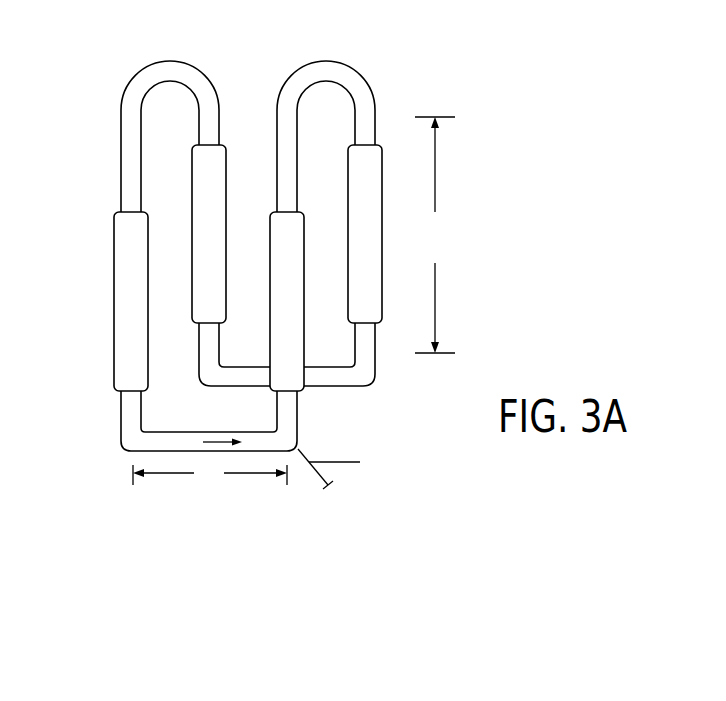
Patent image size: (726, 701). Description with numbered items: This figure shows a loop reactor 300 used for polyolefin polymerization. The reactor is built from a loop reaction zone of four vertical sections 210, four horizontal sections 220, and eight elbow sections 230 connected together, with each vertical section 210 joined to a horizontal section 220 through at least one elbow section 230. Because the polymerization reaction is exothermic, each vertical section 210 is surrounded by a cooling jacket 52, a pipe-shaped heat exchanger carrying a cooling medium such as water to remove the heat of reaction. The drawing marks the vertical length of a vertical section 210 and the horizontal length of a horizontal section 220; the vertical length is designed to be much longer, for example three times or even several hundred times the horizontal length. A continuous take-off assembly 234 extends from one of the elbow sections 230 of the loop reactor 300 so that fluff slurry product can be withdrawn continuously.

The loop reactor 300 is at (261, 257).
The cooling jacket 52 is at (114, 300).
The vertical section 210 is at (135, 413).
The horizontal section 220 is at (182, 432).
The elbow section 230 is at (120, 450).
The continuous take-off (CTO) assembly 234 is at (328, 440).